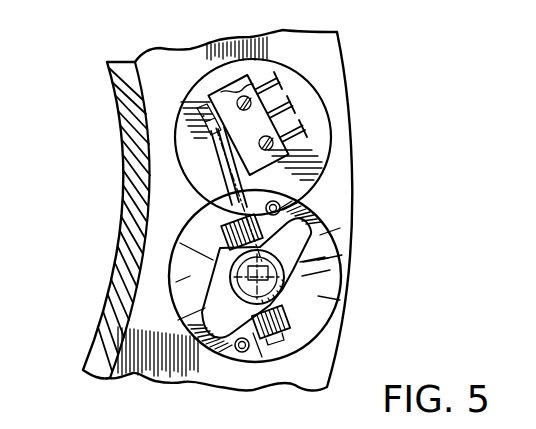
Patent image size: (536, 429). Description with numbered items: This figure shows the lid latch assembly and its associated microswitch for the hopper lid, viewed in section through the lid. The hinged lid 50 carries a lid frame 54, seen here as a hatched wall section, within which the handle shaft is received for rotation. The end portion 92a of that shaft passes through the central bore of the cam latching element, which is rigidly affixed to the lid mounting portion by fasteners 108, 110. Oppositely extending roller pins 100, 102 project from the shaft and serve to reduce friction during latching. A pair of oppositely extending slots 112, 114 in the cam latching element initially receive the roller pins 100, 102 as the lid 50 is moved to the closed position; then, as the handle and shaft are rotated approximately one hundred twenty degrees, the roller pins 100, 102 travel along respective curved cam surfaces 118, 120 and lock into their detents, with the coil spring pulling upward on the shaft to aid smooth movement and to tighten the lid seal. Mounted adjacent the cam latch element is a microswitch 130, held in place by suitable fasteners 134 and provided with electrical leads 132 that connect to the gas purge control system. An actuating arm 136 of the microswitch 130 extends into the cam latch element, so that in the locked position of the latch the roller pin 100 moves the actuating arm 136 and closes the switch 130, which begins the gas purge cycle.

The hinged lid 50 is at (107, 69).
The lid frame 54 is at (128, 100).
The microswitch 130 is at (220, 97).
The fasteners 134 is at (243, 90).
The electrical leads 132 is at (274, 76).
The actuating arm 136 is at (221, 165).
The roller pin 102 is at (228, 243).
The fastener 108 is at (318, 184).
The shaft end portion 92a is at (228, 262).
The slot 114 is at (220, 317).
The slot 112 is at (295, 237).
The curved cam surface 118 is at (323, 270).
The curved cam surface 120 is at (186, 282).
The roller pin 100 is at (303, 310).
The fastener 110 is at (232, 352).